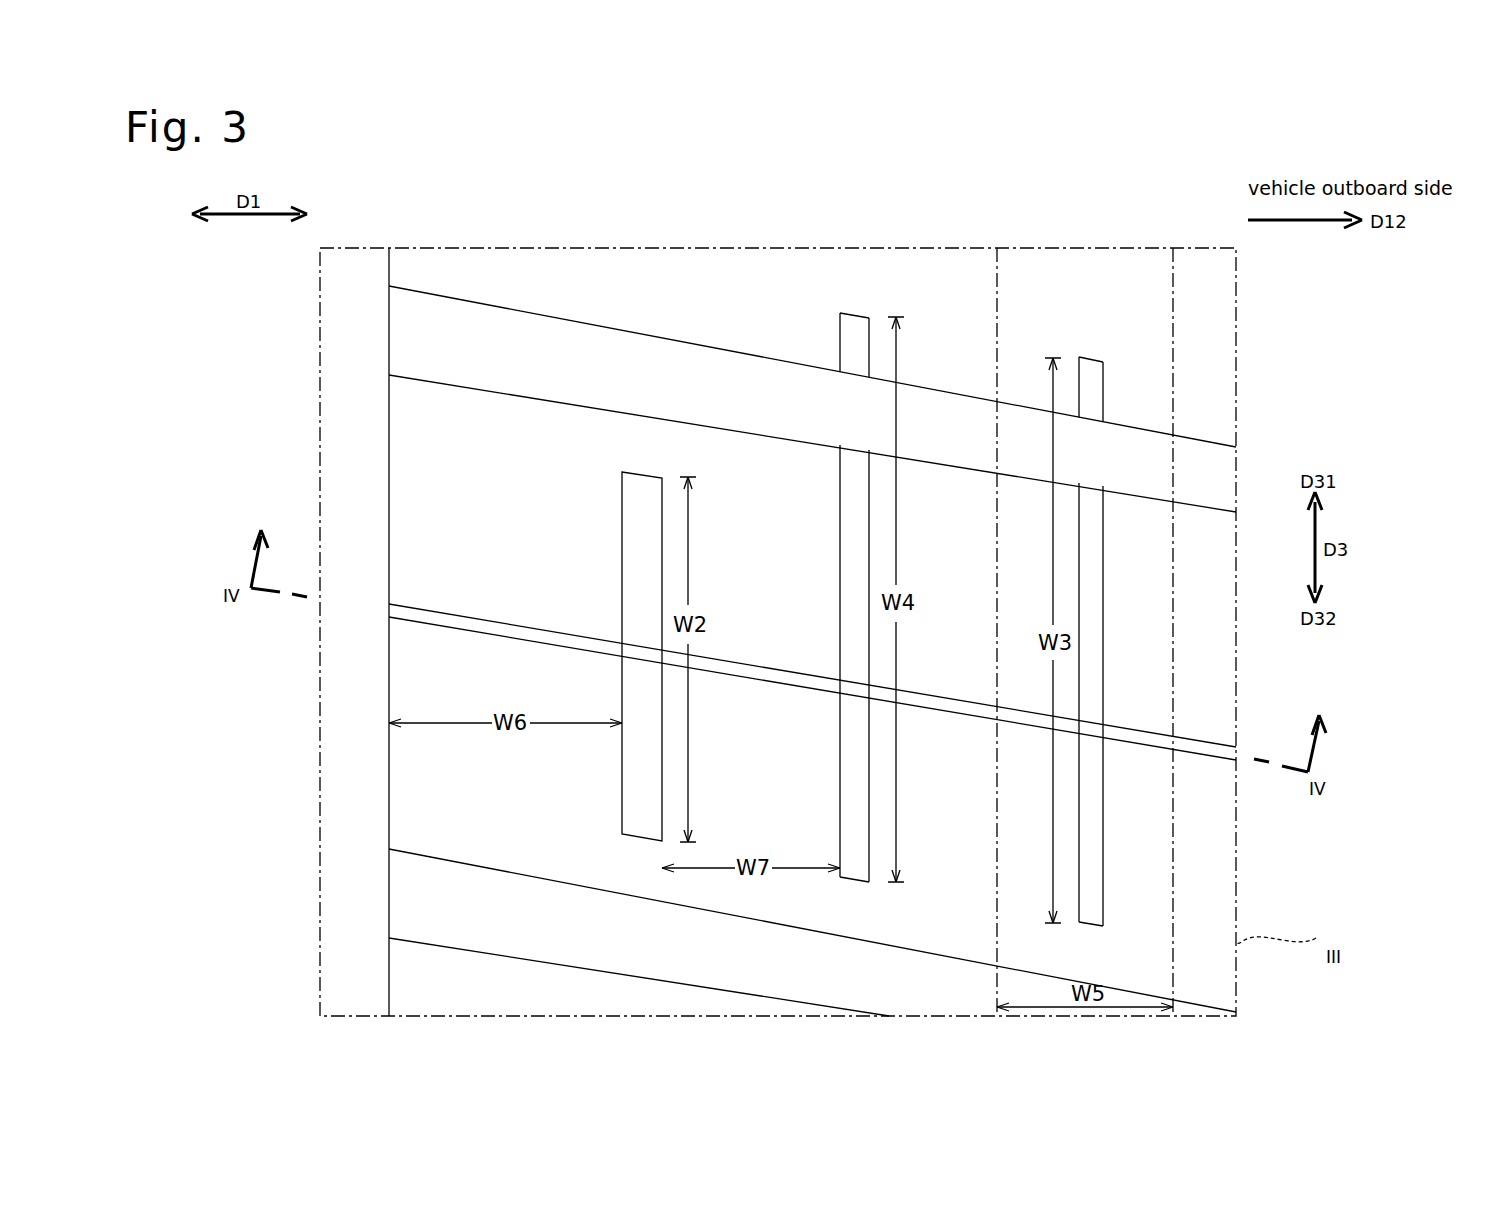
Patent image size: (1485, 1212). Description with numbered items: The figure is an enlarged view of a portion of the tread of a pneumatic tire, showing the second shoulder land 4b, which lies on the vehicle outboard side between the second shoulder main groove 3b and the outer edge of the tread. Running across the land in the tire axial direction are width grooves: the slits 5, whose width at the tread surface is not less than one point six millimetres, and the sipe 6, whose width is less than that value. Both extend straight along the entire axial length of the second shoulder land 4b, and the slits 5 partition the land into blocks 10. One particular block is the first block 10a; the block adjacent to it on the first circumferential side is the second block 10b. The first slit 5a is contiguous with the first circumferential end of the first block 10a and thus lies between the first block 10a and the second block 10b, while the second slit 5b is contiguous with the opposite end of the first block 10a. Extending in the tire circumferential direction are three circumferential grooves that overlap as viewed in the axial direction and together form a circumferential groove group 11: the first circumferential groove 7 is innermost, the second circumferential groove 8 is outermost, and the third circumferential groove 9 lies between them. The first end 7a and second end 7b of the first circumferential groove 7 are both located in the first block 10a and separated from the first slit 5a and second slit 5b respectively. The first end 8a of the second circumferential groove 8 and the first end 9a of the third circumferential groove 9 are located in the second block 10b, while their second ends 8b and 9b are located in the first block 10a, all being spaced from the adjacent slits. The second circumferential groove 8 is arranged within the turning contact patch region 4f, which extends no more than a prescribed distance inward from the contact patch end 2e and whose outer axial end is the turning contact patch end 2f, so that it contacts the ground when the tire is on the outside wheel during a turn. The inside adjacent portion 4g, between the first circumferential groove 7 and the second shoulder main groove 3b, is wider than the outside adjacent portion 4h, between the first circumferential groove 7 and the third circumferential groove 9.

The contact patch end 2e is at (997, 280).
The turning contact patch end 2f is at (1173, 285).
The second shoulder main groove 3b is at (352, 283).
The second shoulder land 4b is at (1173, 240).
The turning contact patch region 4f is at (1173, 216).
The inside adjacent portion 4g is at (490, 452).
The outside adjacent portion 4h is at (752, 500).
The slit 5 is at (812, 638).
The first slit 5a is at (558, 345).
The second slit 5b is at (517, 937).
The sipe 6 is at (935, 715).
The first circumferential groove 7 is at (622, 563).
The first end of first circumferential groove 7a is at (643, 472).
The second end of first circumferential groove 7b is at (641, 841).
The second circumferential groove 8 is at (1103, 597).
The first end of second circumferential groove 8a is at (1091, 357).
The second end of second circumferential groove 8b is at (1085, 925).
The third circumferential groove 9 is at (840, 557).
The first end of third circumferential groove 9a is at (857, 313).
The second end of third circumferential groove 9b is at (848, 878).
The block 10 is at (1290, 622).
The first block 10a is at (1207, 854).
The second block 10b is at (1215, 382).
The circumferential groove group 11 is at (1195, 668).